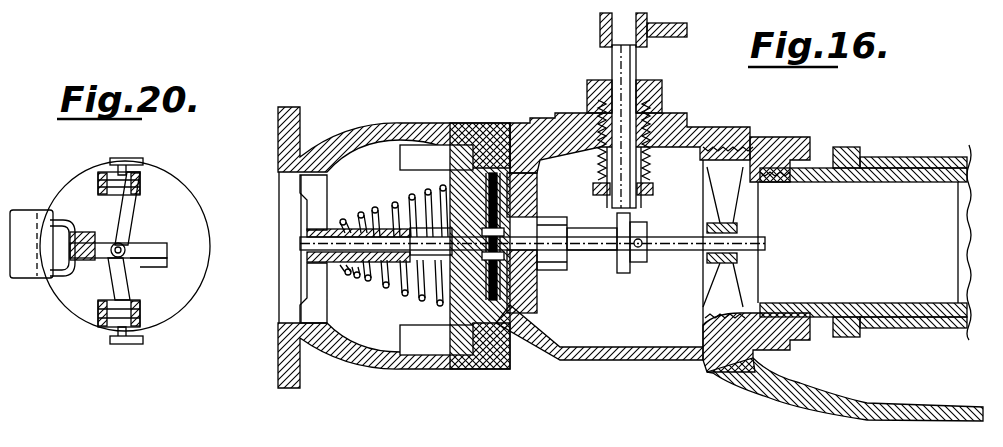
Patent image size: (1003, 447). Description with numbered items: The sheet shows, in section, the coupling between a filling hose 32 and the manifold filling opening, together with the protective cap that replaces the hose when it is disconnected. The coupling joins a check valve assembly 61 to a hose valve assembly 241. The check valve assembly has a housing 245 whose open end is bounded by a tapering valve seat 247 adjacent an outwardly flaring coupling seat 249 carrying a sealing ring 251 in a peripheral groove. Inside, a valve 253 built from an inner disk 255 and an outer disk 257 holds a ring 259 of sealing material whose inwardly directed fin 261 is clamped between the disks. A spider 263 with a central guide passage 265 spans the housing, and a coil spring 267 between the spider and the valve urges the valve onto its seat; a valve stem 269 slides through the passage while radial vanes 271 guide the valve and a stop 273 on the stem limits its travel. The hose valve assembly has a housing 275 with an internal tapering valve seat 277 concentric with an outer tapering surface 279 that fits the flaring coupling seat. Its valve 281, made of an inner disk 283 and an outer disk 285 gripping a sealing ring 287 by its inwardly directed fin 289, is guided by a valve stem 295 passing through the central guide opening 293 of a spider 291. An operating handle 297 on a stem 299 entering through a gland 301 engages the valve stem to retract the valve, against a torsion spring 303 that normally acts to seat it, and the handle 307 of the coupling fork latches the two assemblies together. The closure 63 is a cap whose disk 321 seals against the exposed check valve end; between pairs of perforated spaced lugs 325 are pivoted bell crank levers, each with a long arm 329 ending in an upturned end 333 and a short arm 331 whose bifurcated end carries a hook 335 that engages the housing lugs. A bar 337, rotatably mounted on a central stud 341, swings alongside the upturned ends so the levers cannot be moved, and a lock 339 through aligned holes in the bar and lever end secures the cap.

In FIG. 16, the filling hose 32 is at (904, 160).
In FIG. 16, the check valve assembly 61 is at (334, 187).
In FIG. 16, the hose valve assembly 241 is at (607, 302).
In FIG. 16, the housing 245 is at (382, 131).
In FIG. 16, the tapering valve seat 247 is at (394, 355).
In FIG. 16, the outwardly flaring coupling seat 249 is at (535, 327).
In FIG. 16, the sealing ring 251 is at (482, 366).
In FIG. 16, the valve 253 is at (440, 290).
In FIG. 16, the inner disk 255 is at (436, 157).
In FIG. 16, the outer disk 257 is at (520, 195).
In FIG. 16, the ring of sealing material 259 is at (481, 180).
In FIG. 16, the inwardly directed fin 261 is at (447, 191).
In FIG. 16, the spider 263 is at (313, 272).
In FIG. 16, the central guide passage 265 is at (318, 247).
In FIG. 16, the coil spring 267 is at (383, 284).
In FIG. 16, the valve stem 269 is at (361, 226).
In FIG. 16, the radial vanes 271 is at (403, 168).
In FIG. 16, the stop 273 is at (403, 208).
In FIG. 16, the housing 275 is at (620, 361).
In FIG. 16, the internal tapering valve seat 277 is at (530, 183).
In FIG. 16, the outer tapering surface 279 is at (507, 369).
In FIG. 16, the valve 281 is at (542, 272).
In FIG. 16, the inner disk 283 is at (525, 298).
In FIG. 16, the outer disk 285 is at (533, 209).
In FIG. 16, the sealing ring 287 is at (528, 127).
In FIG. 16, the inwardly directed fin 289 is at (530, 200).
In FIG. 16, the spider 291 is at (728, 212).
In FIG. 16, the central guide opening 293 is at (710, 241).
In FIG. 16, the valve stem 295 is at (655, 251).
In FIG. 16, the operating handle 297 is at (676, 24).
In FIG. 16, the stem 299 is at (616, 69).
In FIG. 16, the gland 301 is at (662, 99).
In FIG. 16, the torsion spring 303 is at (655, 169).
In FIG. 16, the handle 307 is at (954, 405).
In FIG. 20, the closure 63 is at (140, 223).
In FIG. 20, the disk 321 is at (70, 309).
In FIG. 20, the perforated spaced lugs 325 is at (99, 183).
In FIG. 20, the long arm 329 is at (121, 207).
In FIG. 20, the short arm 331 is at (140, 192).
In FIG. 20, the upturned end 333 is at (118, 241).
In FIG. 20, the hook 335 is at (131, 158).
In FIG. 20, the bar 337 is at (160, 246).
In FIG. 20, the lock 339 is at (24, 281).
In FIG. 20, the central stud 341 is at (105, 266).